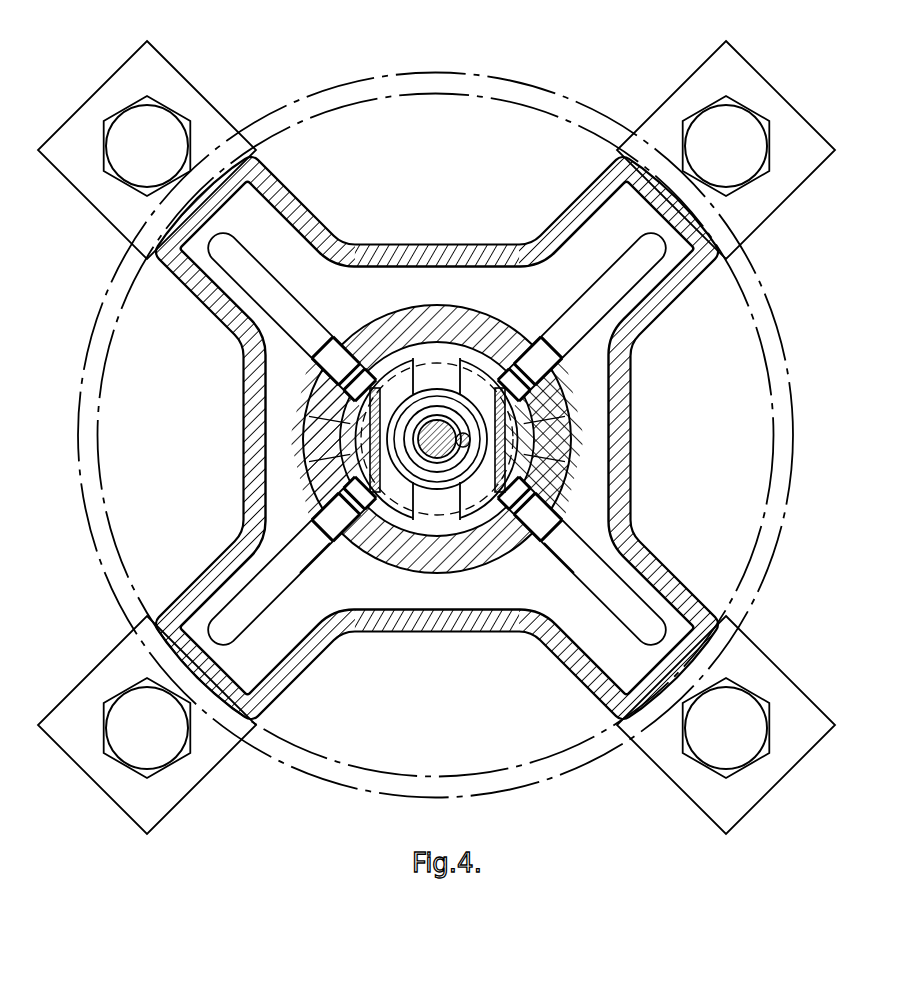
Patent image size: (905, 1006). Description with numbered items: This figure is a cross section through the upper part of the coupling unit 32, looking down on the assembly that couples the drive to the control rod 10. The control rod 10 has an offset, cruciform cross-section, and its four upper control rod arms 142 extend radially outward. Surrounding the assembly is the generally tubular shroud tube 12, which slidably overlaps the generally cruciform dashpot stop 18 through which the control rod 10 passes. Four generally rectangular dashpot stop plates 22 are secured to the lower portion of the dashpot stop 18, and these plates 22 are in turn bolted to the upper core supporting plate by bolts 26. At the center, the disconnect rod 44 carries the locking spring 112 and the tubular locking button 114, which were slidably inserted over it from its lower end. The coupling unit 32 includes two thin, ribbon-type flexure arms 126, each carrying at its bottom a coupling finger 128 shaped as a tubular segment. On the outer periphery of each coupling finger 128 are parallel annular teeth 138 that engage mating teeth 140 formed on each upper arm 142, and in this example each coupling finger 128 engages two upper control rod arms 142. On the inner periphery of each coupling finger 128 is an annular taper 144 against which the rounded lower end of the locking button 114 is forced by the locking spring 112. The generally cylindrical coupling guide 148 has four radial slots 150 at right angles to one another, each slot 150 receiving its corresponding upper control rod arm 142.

The control rod 10 is at (249, 298).
The shroud tube 12 is at (358, 88).
The dashpot stop 18 is at (215, 316).
The dashpot stop plates 22 is at (715, 60).
The bolts 26 is at (757, 115).
The coupling unit 32 is at (503, 439).
The disconnect rod 44 is at (435, 451).
The locking spring 112 is at (435, 416).
The locking button 114 is at (402, 439).
The flexure arms 126 is at (355, 407).
The coupling fingers 128 is at (355, 470).
The teeth 138 is at (420, 372).
The mating teeth 140 is at (347, 492).
The upper control rod arms 142 is at (290, 562).
The annular taper 144 is at (414, 509).
The coupling guide 148 is at (412, 567).
The radial slots 150 is at (356, 352).